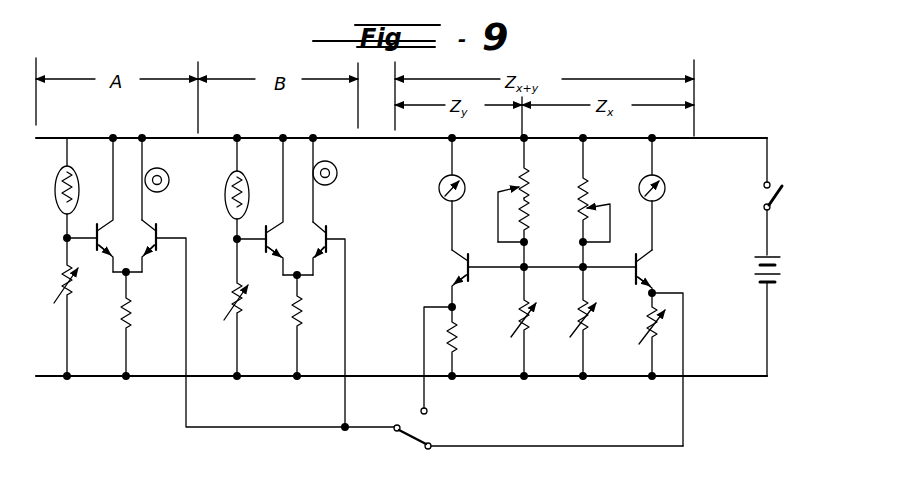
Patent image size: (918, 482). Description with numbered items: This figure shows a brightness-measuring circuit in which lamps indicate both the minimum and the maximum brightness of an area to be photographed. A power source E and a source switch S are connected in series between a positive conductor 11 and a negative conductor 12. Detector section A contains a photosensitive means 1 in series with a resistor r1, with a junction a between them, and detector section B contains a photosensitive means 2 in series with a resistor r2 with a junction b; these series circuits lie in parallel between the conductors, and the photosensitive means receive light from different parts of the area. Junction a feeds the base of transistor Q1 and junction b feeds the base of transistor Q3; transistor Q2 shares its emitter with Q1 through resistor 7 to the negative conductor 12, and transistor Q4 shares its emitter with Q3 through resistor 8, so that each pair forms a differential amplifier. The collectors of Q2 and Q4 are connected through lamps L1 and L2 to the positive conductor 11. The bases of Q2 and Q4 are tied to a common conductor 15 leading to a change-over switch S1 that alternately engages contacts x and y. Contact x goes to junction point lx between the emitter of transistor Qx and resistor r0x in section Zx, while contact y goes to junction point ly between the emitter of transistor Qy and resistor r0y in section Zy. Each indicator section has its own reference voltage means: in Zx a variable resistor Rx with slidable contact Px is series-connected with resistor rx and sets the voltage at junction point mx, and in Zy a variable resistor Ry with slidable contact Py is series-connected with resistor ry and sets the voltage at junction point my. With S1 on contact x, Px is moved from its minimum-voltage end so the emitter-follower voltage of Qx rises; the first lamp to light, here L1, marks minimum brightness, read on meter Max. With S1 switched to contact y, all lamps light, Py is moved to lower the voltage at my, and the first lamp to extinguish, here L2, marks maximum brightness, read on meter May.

The photosensitive means 1 is at (56, 190).
The photosensitive means 2 is at (226, 194).
The resistor 7 is at (132, 316).
The resistor 8 is at (303, 314).
The positive conductor 11 is at (369, 138).
The negative conductor 12 is at (379, 375).
The common conductor 15 is at (376, 430).
The junction a is at (68, 240).
The junction b is at (239, 241).
The resistor r1 is at (60, 272).
The resistor r2 is at (226, 307).
The transistor Q1 is at (100, 203).
The transistor Q2 is at (243, 313).
The transistor Q3 is at (270, 205).
The transistor Q4 is at (330, 316).
The lamp L1 is at (151, 173).
The lamp L2 is at (332, 177).
The meter May is at (434, 192).
The meter Max is at (664, 186).
The transistor Qy is at (466, 268).
The transistor Qx is at (655, 271).
The slidable contact Py is at (510, 188).
The slidable contact Px is at (599, 205).
The variable resistor Ry is at (525, 232).
The variable resistor Rx is at (570, 201).
The junction point my is at (552, 257).
The junction point mx is at (593, 279).
The junction point ly is at (456, 304).
The junction point lx is at (662, 292).
The resistor ry is at (528, 323).
The resistor rx is at (574, 323).
The resistor r0y is at (465, 343).
The resistor r0x is at (642, 336).
The source switch S is at (760, 202).
The power source E is at (780, 268).
The change-over switch S1 is at (538, 436).
The contact x is at (430, 461).
The contact y is at (415, 406).